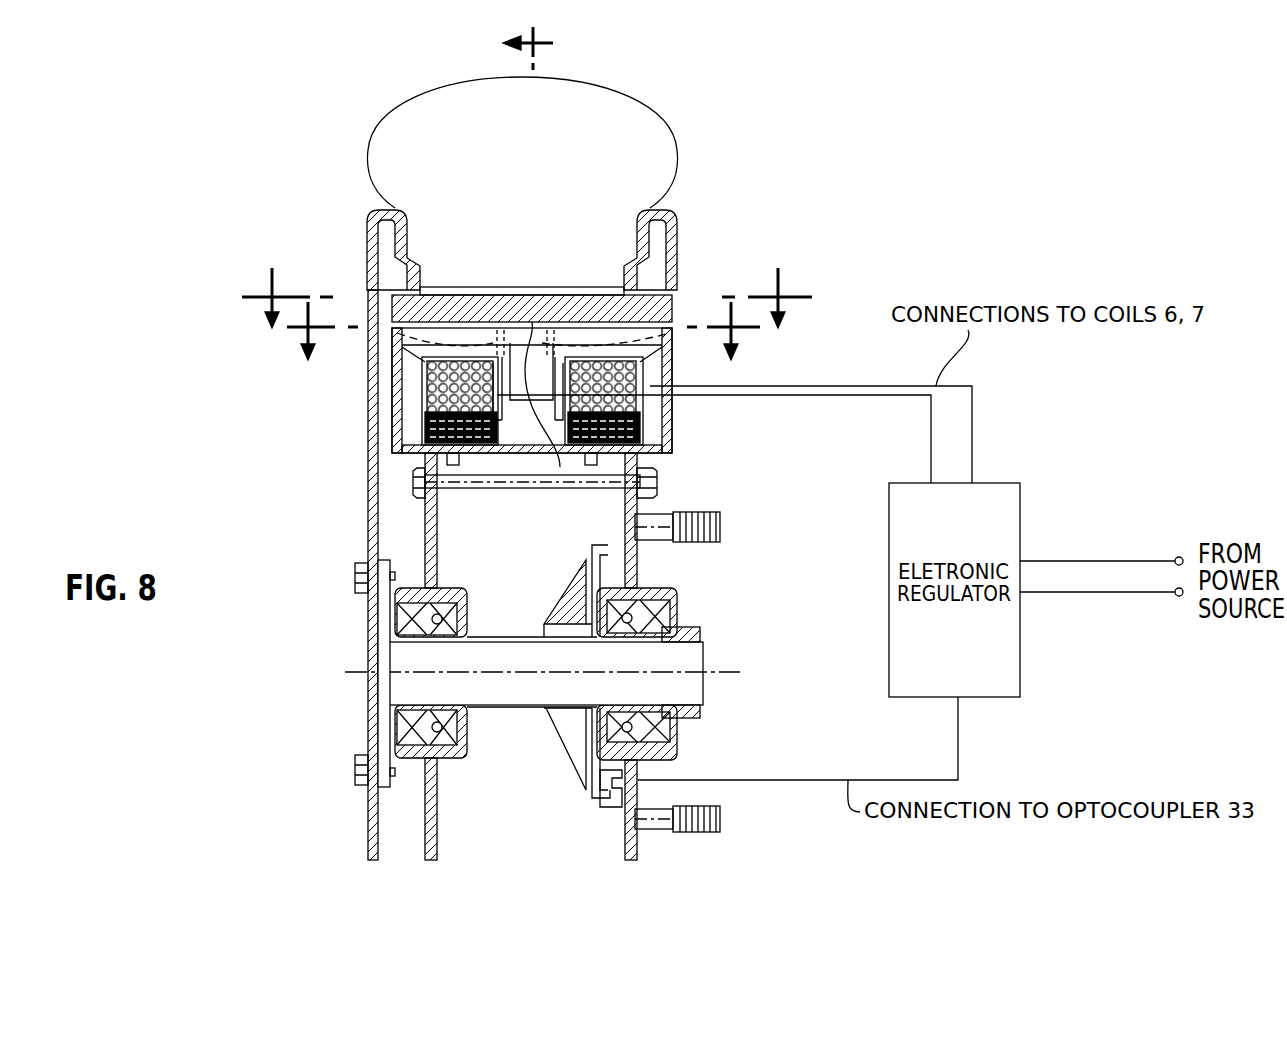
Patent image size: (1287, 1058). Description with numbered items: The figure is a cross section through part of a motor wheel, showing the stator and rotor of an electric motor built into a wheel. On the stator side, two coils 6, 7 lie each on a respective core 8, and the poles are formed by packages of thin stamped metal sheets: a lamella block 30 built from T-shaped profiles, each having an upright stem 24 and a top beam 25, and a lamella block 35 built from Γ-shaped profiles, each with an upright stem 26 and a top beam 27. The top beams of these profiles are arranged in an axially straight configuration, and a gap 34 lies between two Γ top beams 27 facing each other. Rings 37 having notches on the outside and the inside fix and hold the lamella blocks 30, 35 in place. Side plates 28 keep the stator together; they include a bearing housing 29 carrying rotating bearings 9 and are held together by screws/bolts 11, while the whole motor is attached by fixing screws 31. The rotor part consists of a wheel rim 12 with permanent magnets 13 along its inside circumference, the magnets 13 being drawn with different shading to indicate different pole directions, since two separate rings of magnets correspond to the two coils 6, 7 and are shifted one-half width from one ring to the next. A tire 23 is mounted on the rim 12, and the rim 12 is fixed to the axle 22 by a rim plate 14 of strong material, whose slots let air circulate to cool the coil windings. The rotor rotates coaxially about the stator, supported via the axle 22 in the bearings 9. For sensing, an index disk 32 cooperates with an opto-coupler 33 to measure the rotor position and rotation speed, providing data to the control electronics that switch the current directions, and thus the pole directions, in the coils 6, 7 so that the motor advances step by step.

The coil winding 6 is at (427, 405).
The coil winding 7 is at (518, 363).
The annular core 8 is at (453, 465).
The bearing 9 is at (655, 607).
The screws/bolts 11 is at (656, 493).
The wheel rim 12 is at (596, 292).
The permanent magnets 13 is at (380, 282).
The rim plate 14 is at (378, 653).
The axle 22 is at (465, 652).
The tire 23 is at (587, 78).
The upright stem 24 is at (520, 412).
The top beam 25 is at (650, 348).
The upright stem 26 is at (408, 375).
The top beam 27 is at (392, 340).
The side plates 28 is at (432, 516).
The bearing housing 29 is at (450, 595).
The lamella block 30 is at (523, 363).
The fixing screws 31 is at (700, 542).
The index disk 32 is at (578, 738).
The opto-coupler 33 is at (600, 778).
The gap 34 is at (560, 467).
The lamella block 35 is at (410, 353).
The rings 37 is at (497, 335).